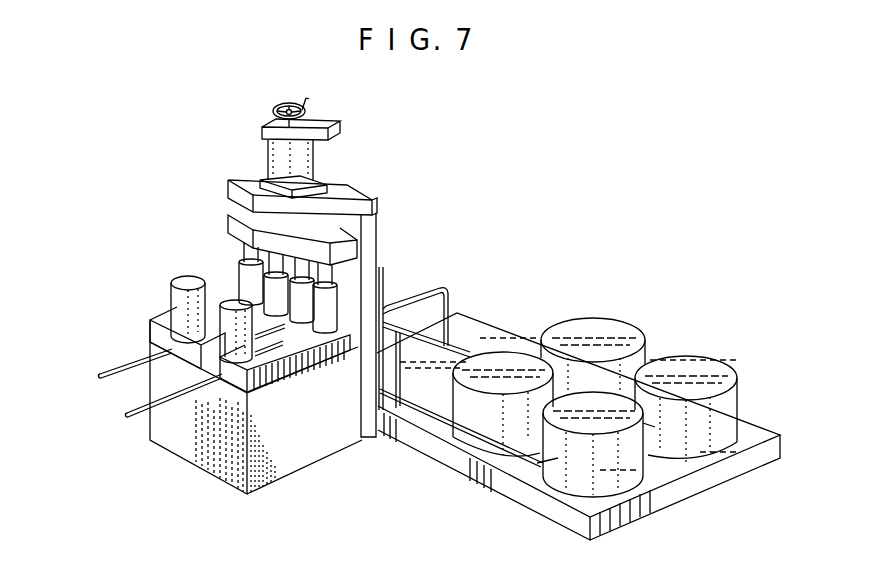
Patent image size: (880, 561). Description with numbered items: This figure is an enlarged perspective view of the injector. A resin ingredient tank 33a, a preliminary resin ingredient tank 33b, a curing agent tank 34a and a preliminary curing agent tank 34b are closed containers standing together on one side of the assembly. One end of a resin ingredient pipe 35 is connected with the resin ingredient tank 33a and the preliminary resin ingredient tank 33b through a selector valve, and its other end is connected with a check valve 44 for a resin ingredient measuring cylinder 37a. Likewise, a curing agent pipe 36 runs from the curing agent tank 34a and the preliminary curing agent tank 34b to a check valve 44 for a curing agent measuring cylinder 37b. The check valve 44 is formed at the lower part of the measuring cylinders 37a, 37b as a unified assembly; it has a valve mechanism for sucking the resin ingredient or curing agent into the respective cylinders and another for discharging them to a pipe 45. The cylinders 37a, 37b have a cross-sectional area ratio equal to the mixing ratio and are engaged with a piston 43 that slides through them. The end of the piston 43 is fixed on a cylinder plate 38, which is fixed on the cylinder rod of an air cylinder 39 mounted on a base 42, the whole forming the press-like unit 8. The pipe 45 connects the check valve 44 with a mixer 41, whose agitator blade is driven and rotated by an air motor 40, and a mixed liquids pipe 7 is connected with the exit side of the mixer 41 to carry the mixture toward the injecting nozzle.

The mixed liquids pipe 7 is at (108, 366).
The press unit 8 is at (355, 194).
The resin ingredient tank 33a is at (688, 360).
The preliminary resin ingredient tank 33b is at (584, 333).
The curing agent tank 34a is at (580, 430).
The preliminary curing agent tank 34b is at (518, 354).
The resin ingredient pipe 35 is at (455, 305).
The curing agent pipe 36 is at (433, 417).
The resin ingredient measuring cylinder 37a is at (245, 282).
The curing agent measuring cylinder 37b is at (278, 273).
The cylinder plate 38 is at (250, 209).
The air cylinder 39 is at (275, 121).
The air motor 40 is at (187, 278).
The mixer 41 is at (166, 309).
The base 42 is at (305, 459).
The piston 43 is at (246, 250).
The check valve 44 is at (343, 360).
The pipe 45 is at (293, 396).